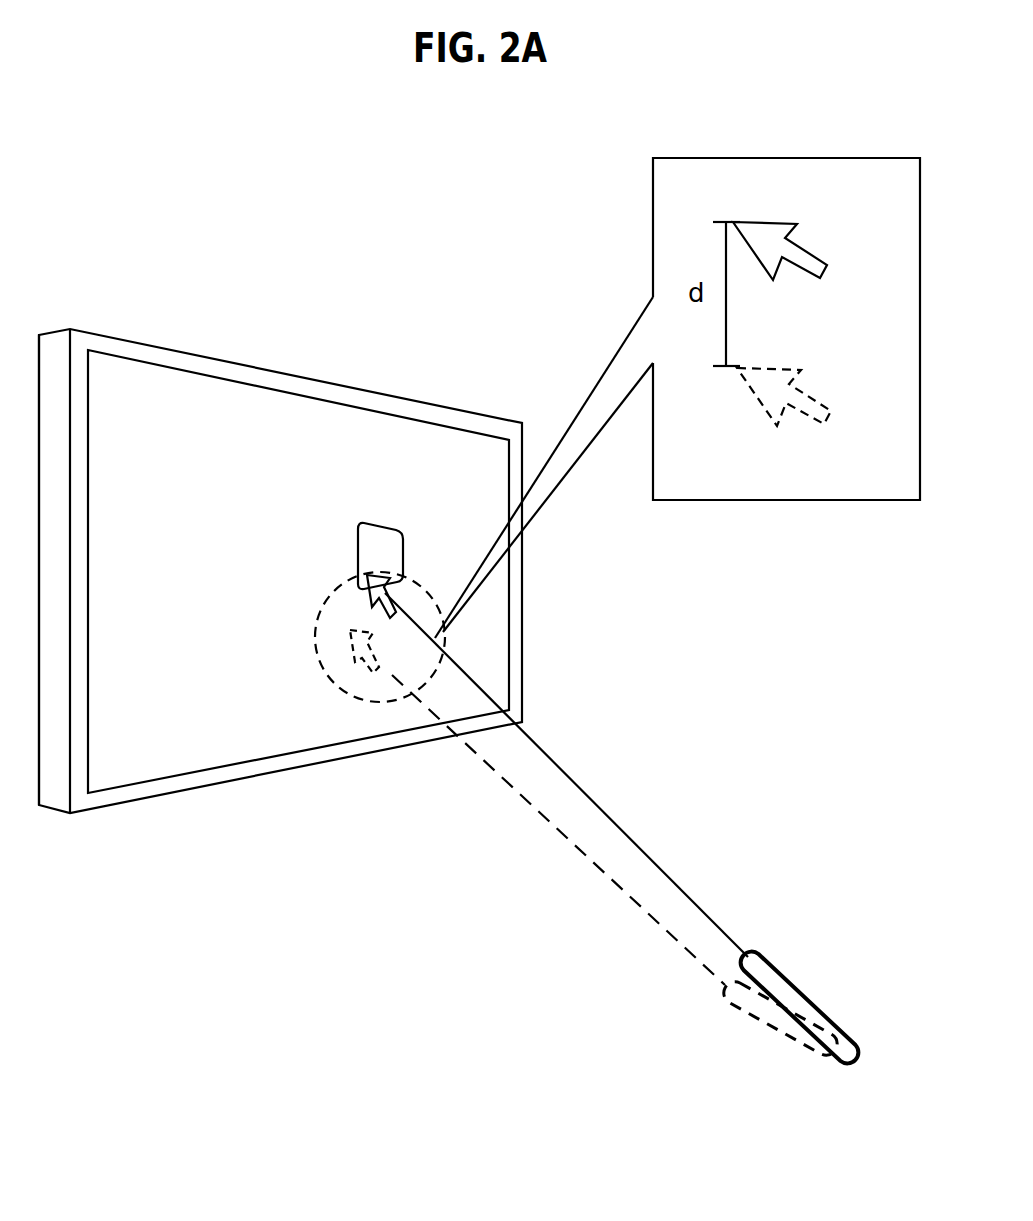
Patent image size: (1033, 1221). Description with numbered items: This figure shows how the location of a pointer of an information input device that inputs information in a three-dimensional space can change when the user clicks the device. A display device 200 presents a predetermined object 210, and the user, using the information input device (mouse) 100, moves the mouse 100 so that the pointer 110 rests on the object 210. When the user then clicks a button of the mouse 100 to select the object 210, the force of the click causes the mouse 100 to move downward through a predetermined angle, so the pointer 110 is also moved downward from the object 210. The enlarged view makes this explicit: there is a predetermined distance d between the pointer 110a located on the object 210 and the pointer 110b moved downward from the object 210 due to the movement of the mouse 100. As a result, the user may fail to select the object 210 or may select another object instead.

The information input device (mouse) 100 is at (833, 1023).
The display device 200 is at (248, 400).
The object 210 is at (358, 560).
The pointer 110 is at (385, 577).
The pointer located on the object 110a is at (783, 228).
The pointer moved downward from the object 110b is at (777, 424).